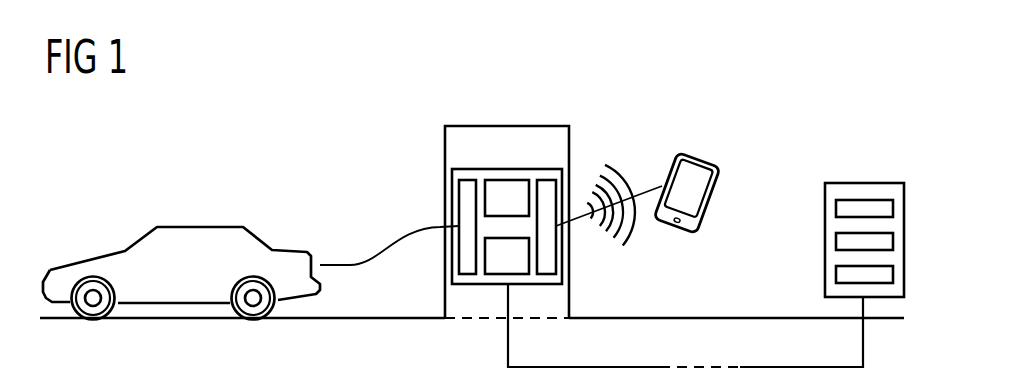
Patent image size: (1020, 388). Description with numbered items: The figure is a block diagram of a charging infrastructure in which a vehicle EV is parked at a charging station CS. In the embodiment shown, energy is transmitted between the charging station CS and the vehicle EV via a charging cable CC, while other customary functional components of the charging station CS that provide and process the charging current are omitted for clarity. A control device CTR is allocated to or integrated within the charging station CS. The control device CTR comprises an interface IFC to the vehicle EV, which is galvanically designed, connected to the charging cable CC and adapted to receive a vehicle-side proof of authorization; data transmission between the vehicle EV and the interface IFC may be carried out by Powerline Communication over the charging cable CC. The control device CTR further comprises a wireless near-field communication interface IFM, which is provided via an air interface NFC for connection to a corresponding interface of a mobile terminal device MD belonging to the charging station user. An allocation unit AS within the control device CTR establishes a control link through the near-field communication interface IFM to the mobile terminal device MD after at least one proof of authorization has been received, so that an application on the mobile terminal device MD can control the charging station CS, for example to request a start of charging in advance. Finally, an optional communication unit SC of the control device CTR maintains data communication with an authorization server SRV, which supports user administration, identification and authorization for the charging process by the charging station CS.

The vehicle EV is at (203, 224).
The charging cable CC is at (350, 262).
The charging station CS is at (530, 125).
The control device CTR is at (490, 168).
The interface IFC is at (467, 265).
The near-field communication interface IFM is at (548, 265).
The allocation unit AS is at (507, 198).
The communication unit SC is at (507, 256).
The air interface NFC is at (610, 170).
The mobile terminal device MD is at (715, 202).
The authorization server SRV is at (863, 183).